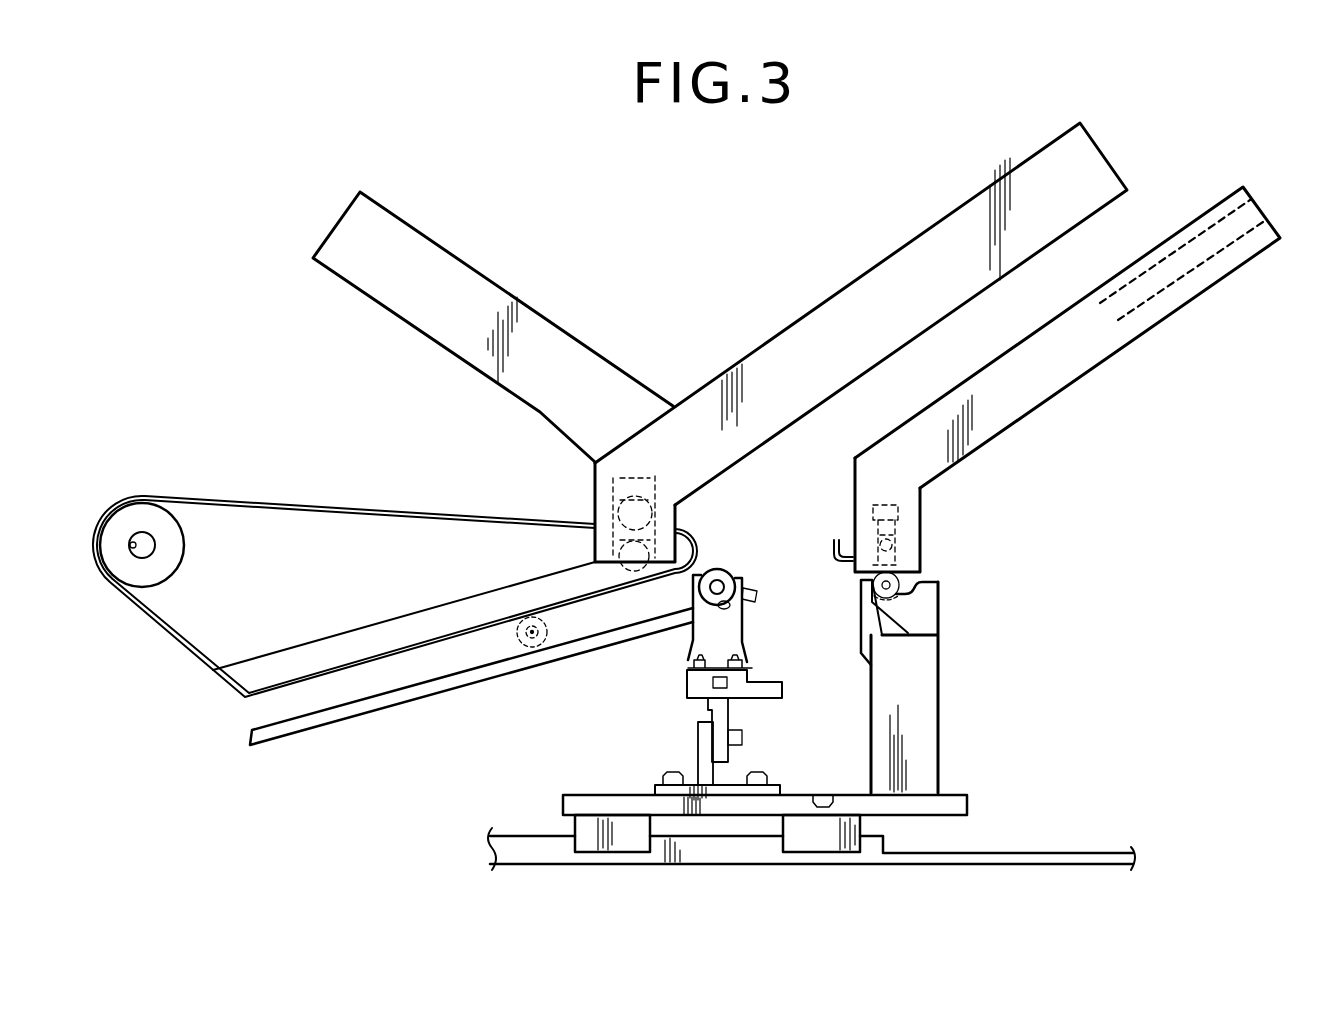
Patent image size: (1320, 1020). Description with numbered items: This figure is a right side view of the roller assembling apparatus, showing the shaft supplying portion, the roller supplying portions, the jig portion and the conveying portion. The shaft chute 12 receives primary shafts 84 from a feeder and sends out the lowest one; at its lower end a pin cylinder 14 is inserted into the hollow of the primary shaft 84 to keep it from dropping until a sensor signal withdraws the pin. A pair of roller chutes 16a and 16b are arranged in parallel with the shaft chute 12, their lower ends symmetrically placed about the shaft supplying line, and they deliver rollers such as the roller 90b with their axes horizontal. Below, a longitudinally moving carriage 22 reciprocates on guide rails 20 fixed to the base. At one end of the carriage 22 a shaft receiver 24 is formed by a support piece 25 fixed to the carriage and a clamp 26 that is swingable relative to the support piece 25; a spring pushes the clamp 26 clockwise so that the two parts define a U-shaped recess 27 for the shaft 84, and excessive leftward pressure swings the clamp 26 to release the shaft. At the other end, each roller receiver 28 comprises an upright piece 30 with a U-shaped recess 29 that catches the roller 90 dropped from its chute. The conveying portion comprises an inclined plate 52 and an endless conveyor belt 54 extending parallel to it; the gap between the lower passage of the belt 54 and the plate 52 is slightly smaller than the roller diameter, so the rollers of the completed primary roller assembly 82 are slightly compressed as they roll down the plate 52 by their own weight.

The chute 12 is at (1173, 300).
The pin cylinder 14 is at (848, 556).
The roller chute 16a is at (495, 296).
The roller chute 16b is at (993, 203).
The guide rails 20 is at (538, 845).
The longitudinally moving carriage 22 is at (607, 800).
The shaft receiver 24 is at (935, 663).
The support piece 25 is at (922, 617).
The clamp 26 is at (865, 640).
The U-shaped recess 27 is at (910, 583).
The roller receiver 28 is at (748, 569).
The U-shaped recess 29 is at (720, 608).
The upright piece 30 is at (690, 630).
The inclined plate 52 is at (336, 722).
The endless conveyor belt 54 is at (235, 492).
The primary roller assembly 82 is at (510, 636).
The primary shaft 84 is at (932, 510).
The roller 90 is at (548, 627).
The roller 90b is at (600, 545).